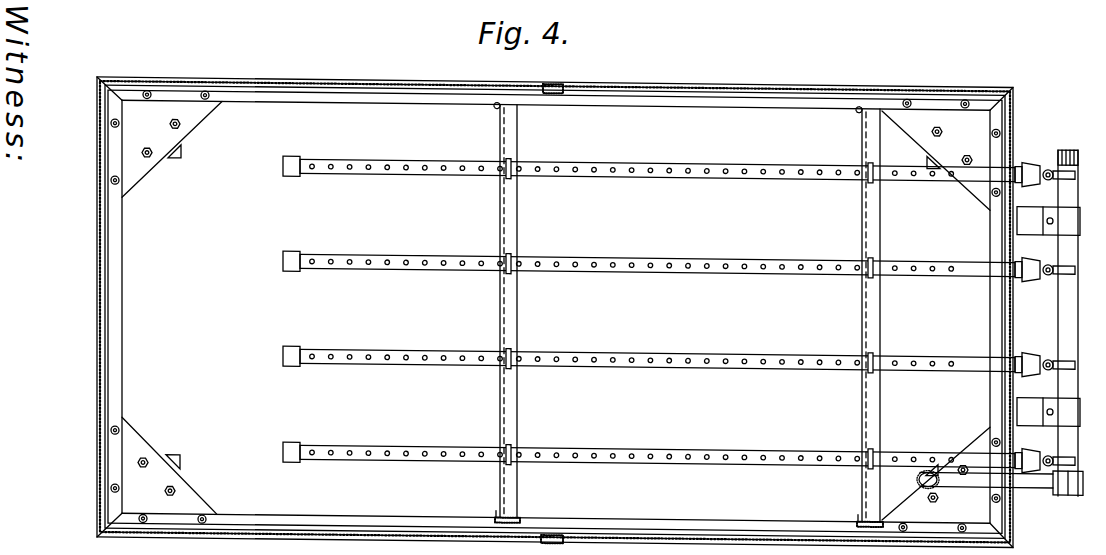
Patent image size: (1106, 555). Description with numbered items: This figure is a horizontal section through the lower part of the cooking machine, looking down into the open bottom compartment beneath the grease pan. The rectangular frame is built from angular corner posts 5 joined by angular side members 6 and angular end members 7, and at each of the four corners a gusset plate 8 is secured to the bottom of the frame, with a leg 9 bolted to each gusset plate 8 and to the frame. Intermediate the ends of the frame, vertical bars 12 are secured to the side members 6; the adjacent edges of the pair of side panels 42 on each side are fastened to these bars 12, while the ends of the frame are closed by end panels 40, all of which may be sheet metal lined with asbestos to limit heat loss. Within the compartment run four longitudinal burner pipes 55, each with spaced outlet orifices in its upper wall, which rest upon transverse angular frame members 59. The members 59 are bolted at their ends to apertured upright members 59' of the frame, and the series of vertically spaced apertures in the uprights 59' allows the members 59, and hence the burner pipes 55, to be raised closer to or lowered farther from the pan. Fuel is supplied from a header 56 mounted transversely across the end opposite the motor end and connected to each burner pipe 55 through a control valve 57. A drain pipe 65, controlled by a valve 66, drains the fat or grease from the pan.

The end panel 40 is at (100, 270).
The side panel 42 is at (305, 81).
The corner post 5 is at (106, 86).
The side member 6 is at (392, 100).
The end member 7 is at (122, 306).
The gusset plate 8 is at (196, 122).
The leg 9 is at (181, 152).
The vertical bar 12 is at (556, 90).
The transverse angular frame member 59 is at (690, 313).
The upright member 59' is at (668, 507).
The burner pipe 55 is at (692, 172).
The control valve 57 is at (1056, 137).
The header 56 is at (1062, 294).
The drain pipe 65 is at (1020, 477).
The valve 66 is at (1058, 484).